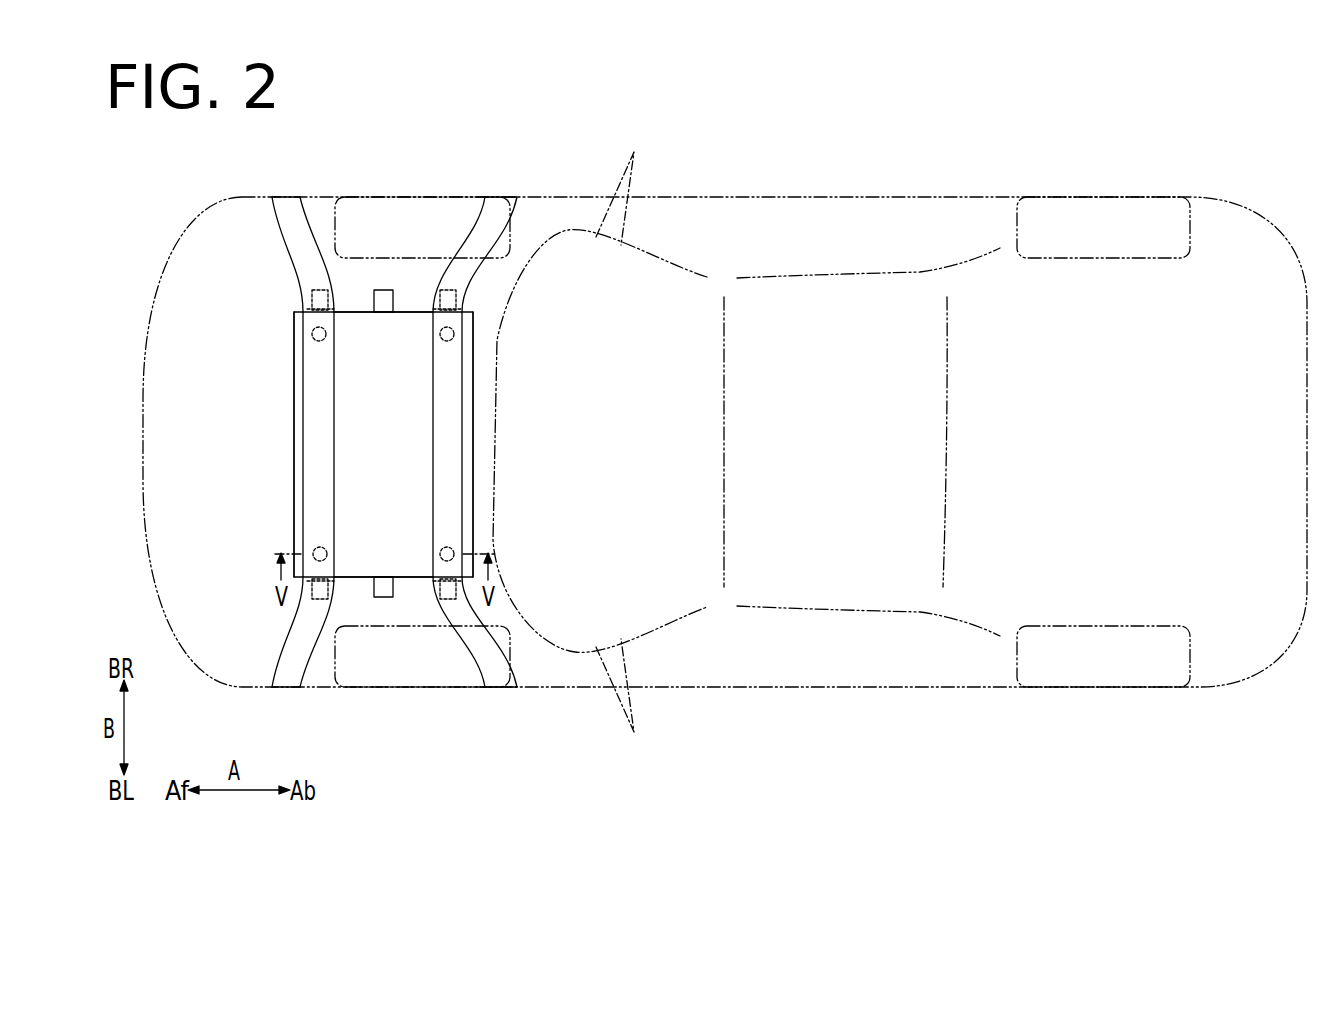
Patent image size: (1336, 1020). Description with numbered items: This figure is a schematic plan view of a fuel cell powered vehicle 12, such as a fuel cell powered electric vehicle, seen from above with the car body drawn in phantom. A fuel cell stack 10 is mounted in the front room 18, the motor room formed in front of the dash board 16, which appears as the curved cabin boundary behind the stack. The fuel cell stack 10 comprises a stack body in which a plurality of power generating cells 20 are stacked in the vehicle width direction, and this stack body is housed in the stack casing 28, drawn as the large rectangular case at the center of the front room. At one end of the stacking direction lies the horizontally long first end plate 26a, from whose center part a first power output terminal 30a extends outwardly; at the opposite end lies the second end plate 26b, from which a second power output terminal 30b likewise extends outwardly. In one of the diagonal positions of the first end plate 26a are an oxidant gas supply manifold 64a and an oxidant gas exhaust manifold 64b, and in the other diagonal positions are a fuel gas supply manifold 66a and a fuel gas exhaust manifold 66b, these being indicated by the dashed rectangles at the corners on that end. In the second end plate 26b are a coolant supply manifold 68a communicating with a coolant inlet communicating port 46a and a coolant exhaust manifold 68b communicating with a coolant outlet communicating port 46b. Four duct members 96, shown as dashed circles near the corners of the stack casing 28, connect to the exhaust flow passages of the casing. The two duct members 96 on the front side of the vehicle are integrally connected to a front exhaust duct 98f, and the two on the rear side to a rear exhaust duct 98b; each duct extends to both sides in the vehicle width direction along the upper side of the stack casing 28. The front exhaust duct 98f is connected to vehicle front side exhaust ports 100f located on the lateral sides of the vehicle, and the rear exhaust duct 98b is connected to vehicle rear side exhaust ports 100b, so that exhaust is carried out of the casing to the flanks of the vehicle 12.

The fuel cell powered vehicle 12 is at (167, 164).
The front room 18 is at (211, 240).
The dash board 16 is at (494, 473).
The fuel cell stack 10 is at (282, 377).
The power generating cells 20 is at (418, 380).
The stack casing 28 is at (427, 433).
The first end plate 26a is at (420, 576).
The second end plate 26b is at (420, 313).
The first power output terminal 30a is at (383, 597).
The second power output terminal 30b is at (383, 290).
The duct members 96 is at (312, 334).
The front exhaust duct 98f is at (313, 398).
The rear exhaust duct 98b is at (455, 398).
The vehicle front side exhaust ports 100f is at (287, 197).
The vehicle rear side exhaust ports 100b is at (507, 197).
The coolant supply manifold 68a is at (456, 290).
The coolant exhaust manifold 68b is at (320, 290).
The coolant inlet communicating port 46a is at (447, 300).
The coolant outlet communicating port 46b is at (320, 300).
The fuel gas supply manifold 66a is at (447, 589).
The fuel gas exhaust manifold 66b is at (318, 598).
The oxidant gas supply manifold 64a is at (458, 598).
The oxidant gas exhaust manifold 64b is at (320, 589).